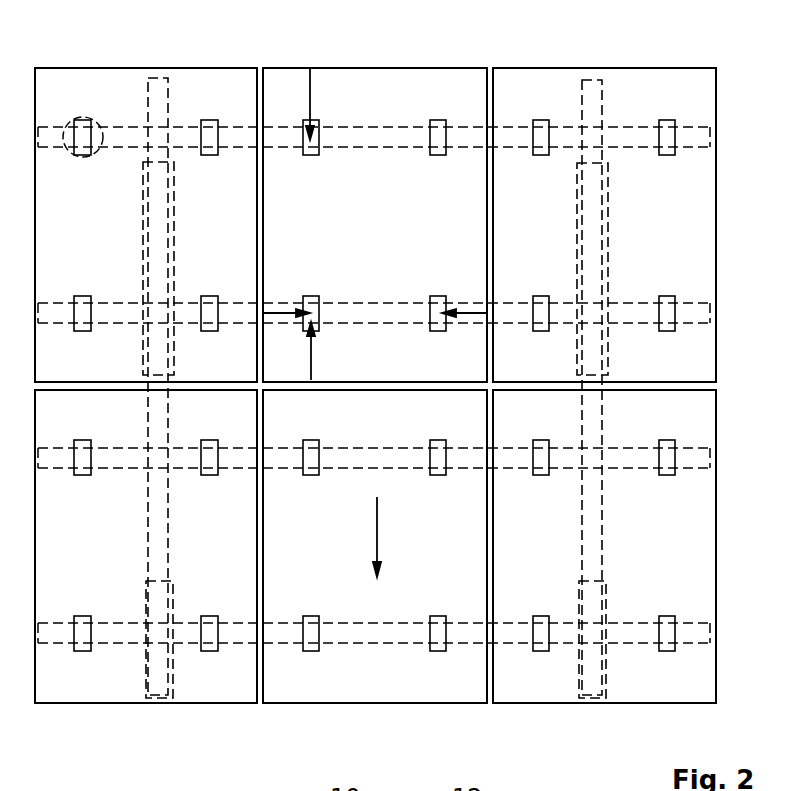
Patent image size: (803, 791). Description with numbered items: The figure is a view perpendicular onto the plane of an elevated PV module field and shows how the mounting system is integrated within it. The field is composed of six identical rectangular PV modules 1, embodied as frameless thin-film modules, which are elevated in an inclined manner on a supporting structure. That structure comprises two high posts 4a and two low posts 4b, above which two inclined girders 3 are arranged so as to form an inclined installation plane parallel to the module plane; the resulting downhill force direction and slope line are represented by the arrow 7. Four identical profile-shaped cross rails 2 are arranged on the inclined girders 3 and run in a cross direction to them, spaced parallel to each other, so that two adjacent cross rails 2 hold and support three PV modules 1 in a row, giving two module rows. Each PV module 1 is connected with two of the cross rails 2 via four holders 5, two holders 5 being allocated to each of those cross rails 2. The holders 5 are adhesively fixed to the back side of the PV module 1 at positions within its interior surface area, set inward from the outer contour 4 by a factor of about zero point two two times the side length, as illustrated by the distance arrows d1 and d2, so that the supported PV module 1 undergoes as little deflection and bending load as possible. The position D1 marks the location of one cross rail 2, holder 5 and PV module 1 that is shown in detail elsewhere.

The PV module 1 is at (238, 83).
The cross rail 2 is at (708, 137).
The inclined girder 3 is at (163, 516).
The outer contour 4 is at (263, 226).
The high post 4a is at (172, 254).
The low post 4b is at (172, 595).
The holder 5 is at (82, 158).
The arrow 7 is at (378, 527).
The position D1 is at (85, 115).
The distance arrow d1 is at (285, 310).
The distance arrow d2 is at (312, 99).